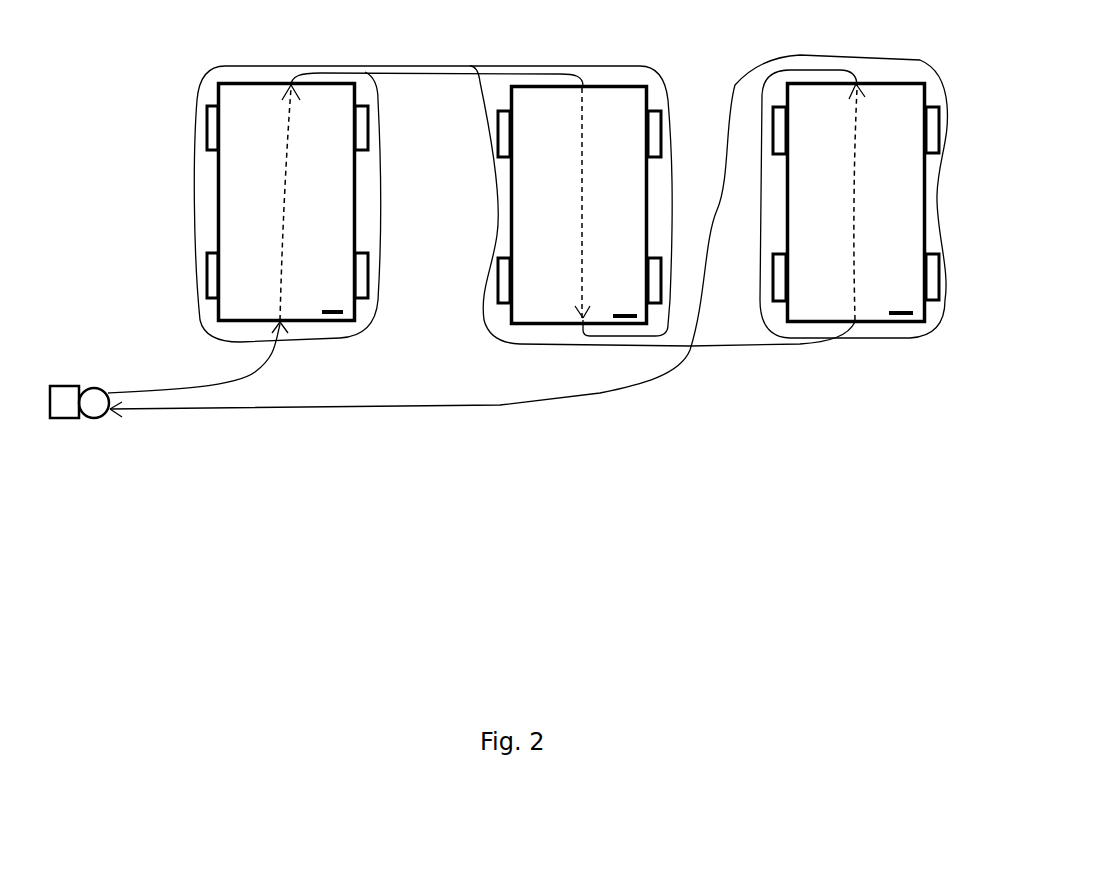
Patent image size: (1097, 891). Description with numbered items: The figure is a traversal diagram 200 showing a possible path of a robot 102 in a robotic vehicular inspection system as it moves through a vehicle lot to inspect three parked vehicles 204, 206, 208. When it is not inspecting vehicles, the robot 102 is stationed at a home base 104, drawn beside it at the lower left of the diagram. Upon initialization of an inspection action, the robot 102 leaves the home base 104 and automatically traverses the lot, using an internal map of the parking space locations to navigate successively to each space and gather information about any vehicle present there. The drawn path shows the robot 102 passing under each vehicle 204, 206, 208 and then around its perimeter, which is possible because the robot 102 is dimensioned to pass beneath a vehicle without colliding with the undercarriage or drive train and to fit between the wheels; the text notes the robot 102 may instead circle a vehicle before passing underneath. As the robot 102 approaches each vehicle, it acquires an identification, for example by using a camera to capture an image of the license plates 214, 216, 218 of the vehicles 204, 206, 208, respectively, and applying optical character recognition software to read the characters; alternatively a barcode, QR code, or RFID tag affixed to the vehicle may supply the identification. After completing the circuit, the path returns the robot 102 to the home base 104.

The robot 102 is at (107, 387).
The home base 104 is at (65, 385).
The traversal diagram 200 is at (732, 538).
The vehicle 204 is at (215, 190).
The vehicle 206 is at (508, 192).
The vehicle 208 is at (800, 327).
The license plate 214 is at (337, 322).
The license plate 216 is at (622, 323).
The license plate 218 is at (900, 317).